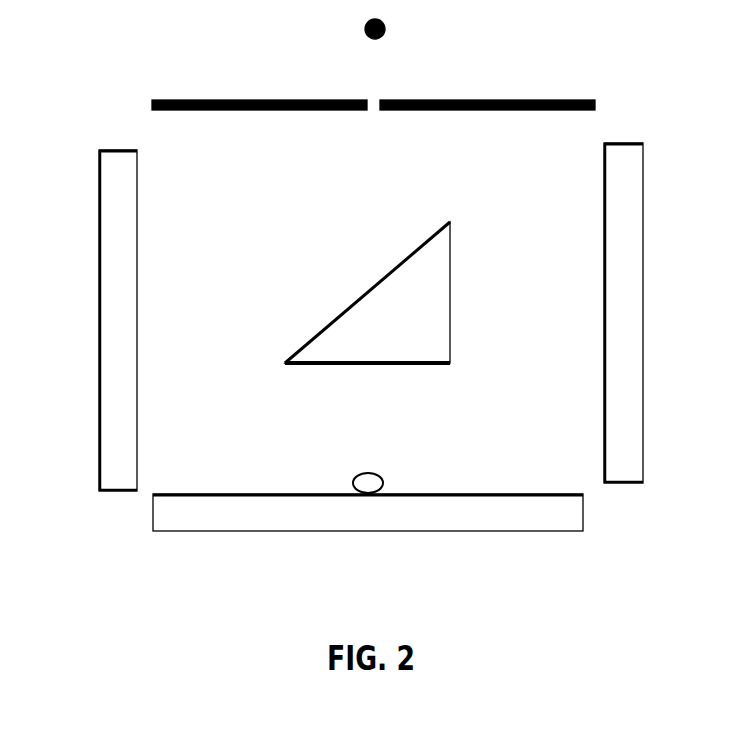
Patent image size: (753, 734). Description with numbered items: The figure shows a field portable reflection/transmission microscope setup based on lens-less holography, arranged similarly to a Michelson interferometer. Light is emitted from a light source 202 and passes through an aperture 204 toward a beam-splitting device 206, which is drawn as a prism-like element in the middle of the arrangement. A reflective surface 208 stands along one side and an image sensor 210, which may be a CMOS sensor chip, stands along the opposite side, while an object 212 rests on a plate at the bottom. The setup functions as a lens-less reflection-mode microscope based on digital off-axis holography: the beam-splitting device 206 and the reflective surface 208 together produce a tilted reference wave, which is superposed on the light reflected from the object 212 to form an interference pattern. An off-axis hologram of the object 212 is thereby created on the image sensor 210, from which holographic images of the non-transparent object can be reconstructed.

The light source 202 is at (364, 26).
The aperture 204 is at (195, 101).
The beam-splitting device 206 is at (447, 242).
The reflective surface 208 is at (101, 262).
The image sensor 210 is at (643, 202).
The object 212 is at (384, 484).